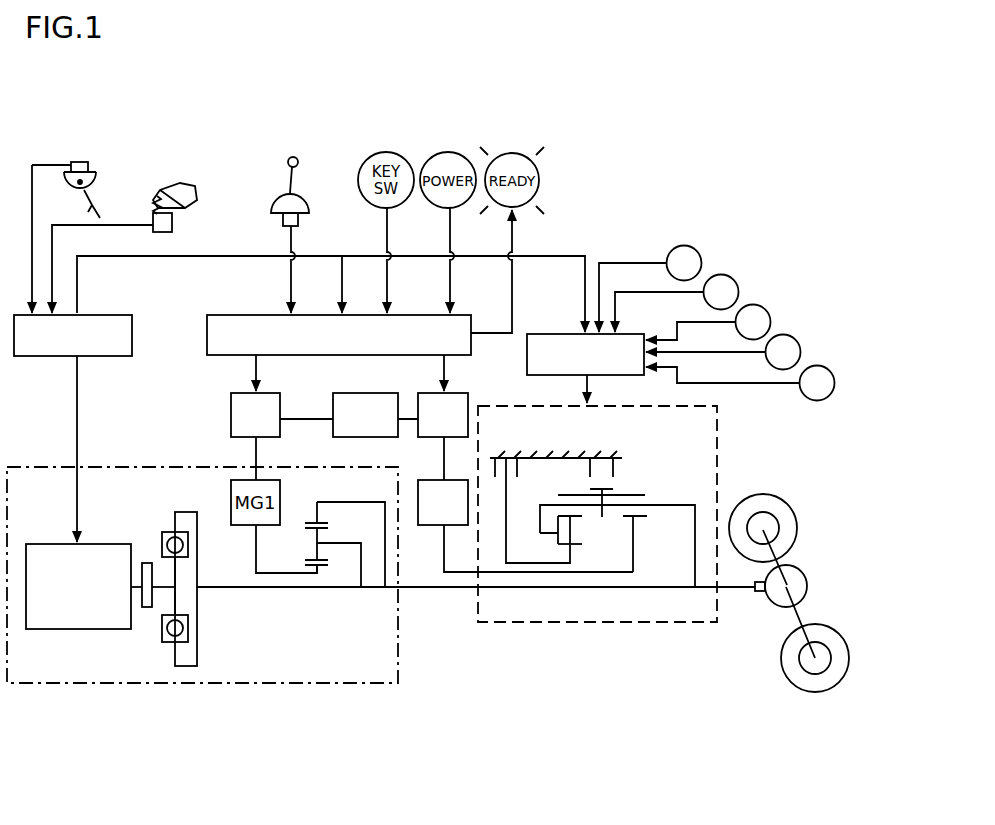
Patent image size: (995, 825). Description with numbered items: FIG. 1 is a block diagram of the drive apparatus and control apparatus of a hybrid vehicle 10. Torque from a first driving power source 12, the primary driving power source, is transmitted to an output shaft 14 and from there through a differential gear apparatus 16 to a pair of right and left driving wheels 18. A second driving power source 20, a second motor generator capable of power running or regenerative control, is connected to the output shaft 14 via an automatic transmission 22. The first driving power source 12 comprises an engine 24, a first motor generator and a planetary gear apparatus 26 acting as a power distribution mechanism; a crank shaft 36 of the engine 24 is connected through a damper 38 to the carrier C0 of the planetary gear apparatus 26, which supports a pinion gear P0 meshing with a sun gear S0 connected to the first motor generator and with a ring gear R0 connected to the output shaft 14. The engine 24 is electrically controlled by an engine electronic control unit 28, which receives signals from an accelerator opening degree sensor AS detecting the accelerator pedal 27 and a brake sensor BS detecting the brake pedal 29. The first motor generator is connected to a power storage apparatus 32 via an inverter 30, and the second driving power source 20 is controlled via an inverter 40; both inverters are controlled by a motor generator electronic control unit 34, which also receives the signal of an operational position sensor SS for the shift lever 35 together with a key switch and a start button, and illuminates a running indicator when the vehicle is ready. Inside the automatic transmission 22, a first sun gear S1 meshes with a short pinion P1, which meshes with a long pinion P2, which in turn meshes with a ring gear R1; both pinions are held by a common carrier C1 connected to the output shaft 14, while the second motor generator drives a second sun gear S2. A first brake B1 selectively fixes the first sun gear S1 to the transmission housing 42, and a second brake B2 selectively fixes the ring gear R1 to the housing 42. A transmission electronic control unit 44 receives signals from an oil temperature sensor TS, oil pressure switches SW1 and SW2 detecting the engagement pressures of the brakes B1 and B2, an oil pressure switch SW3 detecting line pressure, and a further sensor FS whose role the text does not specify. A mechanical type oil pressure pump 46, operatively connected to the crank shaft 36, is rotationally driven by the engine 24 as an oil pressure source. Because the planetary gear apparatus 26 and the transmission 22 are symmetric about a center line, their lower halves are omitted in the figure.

The hybrid vehicle 10 is at (620, 184).
The first driving power source 12 is at (296, 685).
The output shaft 14 is at (740, 590).
The differential gear apparatus 16 is at (800, 580).
The driving wheels 18 is at (782, 512).
The second driving power source 20 is at (427, 530).
The automatic transmission 22 is at (624, 511).
The engine 24 is at (92, 632).
The planetary gear apparatus 26 is at (318, 573).
The accelerator pedal 27 is at (152, 186).
The electronic control unit for engine control 28 is at (115, 313).
The brake pedal 29 is at (91, 211).
The inverter 30 is at (231, 400).
The power storage apparatus 32 is at (343, 393).
The electronic control unit for controlling motor generators 34 is at (258, 314).
The shift lever 35 is at (300, 178).
The crank shaft 36 is at (136, 590).
The damper 38 is at (170, 645).
The inverter 40 is at (460, 393).
The transmission housing 42 is at (588, 450).
The transmission electronic control unit 44 is at (568, 333).
The mechanical type oil pressure pump 46 is at (147, 563).
The brake sensor BS is at (84, 160).
The accelerator opening degree sensor AS is at (172, 222).
The operational position sensor SS is at (298, 218).
The oil temperature sensor FS is at (684, 263).
The oil temperature sensor TS is at (721, 292).
The oil pressure switch SW1 is at (753, 322).
The oil pressure switch SW2 is at (783, 352).
The oil pressure switch SW3 is at (817, 383).
The ring gear R0 is at (313, 522).
The carrier C0 is at (330, 542).
The pinion gear P0 is at (308, 560).
The sun gear S0 is at (322, 568).
The first brake B1 is at (505, 456).
The second brake B2 is at (605, 456).
The ring gear R1 is at (614, 489).
The carrier C1 is at (678, 505).
The short pinion P1 is at (578, 538).
The long pinion P2 is at (568, 495).
The first sun gear S1 is at (558, 545).
The second sun gear S2 is at (640, 522).